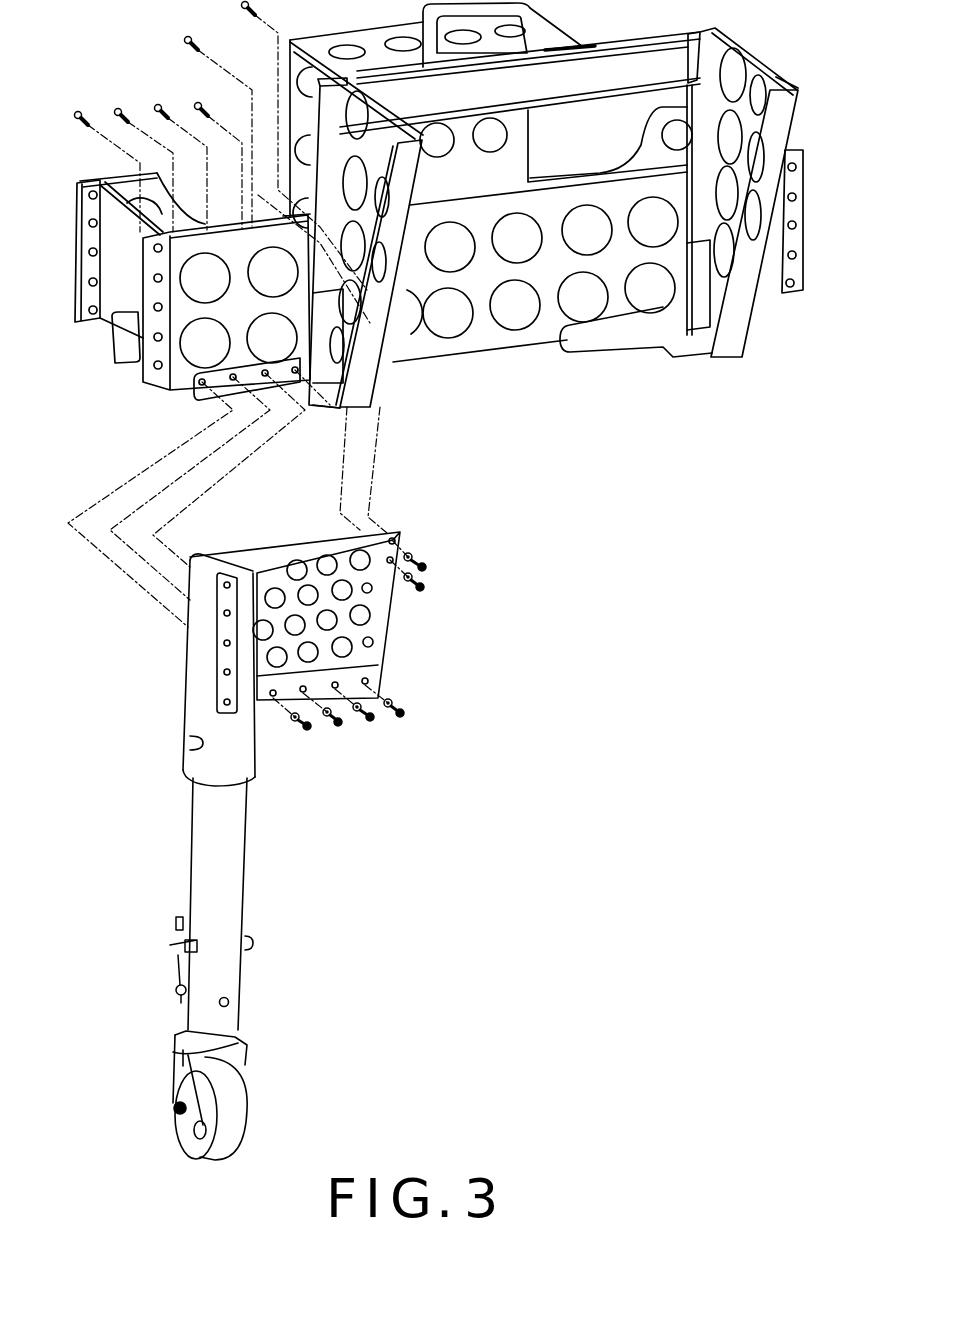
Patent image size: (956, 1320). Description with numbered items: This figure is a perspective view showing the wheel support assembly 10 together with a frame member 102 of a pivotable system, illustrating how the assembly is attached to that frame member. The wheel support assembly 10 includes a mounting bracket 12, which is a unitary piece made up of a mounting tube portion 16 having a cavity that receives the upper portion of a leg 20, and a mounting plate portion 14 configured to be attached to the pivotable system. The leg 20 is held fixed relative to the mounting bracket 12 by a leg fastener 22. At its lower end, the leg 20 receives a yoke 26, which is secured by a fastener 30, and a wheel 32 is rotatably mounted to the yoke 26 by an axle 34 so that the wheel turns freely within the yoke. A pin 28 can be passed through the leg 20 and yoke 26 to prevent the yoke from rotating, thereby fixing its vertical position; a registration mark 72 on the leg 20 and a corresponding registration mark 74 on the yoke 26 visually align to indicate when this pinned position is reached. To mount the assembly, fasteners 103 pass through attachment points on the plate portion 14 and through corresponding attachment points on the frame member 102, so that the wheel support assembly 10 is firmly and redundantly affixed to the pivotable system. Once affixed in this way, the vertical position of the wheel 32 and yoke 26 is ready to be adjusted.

The wheel support assembly 10 is at (384, 881).
The mounting bracket 12 is at (342, 616).
The mounting plate portion 14 is at (383, 665).
The mounting tube portion 16 is at (193, 685).
The leg 20 is at (237, 852).
The leg fastener 22 is at (190, 744).
The yoke 26 is at (247, 1052).
The pin 28 is at (229, 1000).
The fastener 30 is at (250, 942).
The wheel 32 is at (237, 1120).
The axle 34 is at (180, 1112).
The registration mark 72 is at (187, 1023).
The registration mark 74 is at (183, 1060).
The frame member 102 is at (527, 358).
The fasteners 103 is at (186, 44).